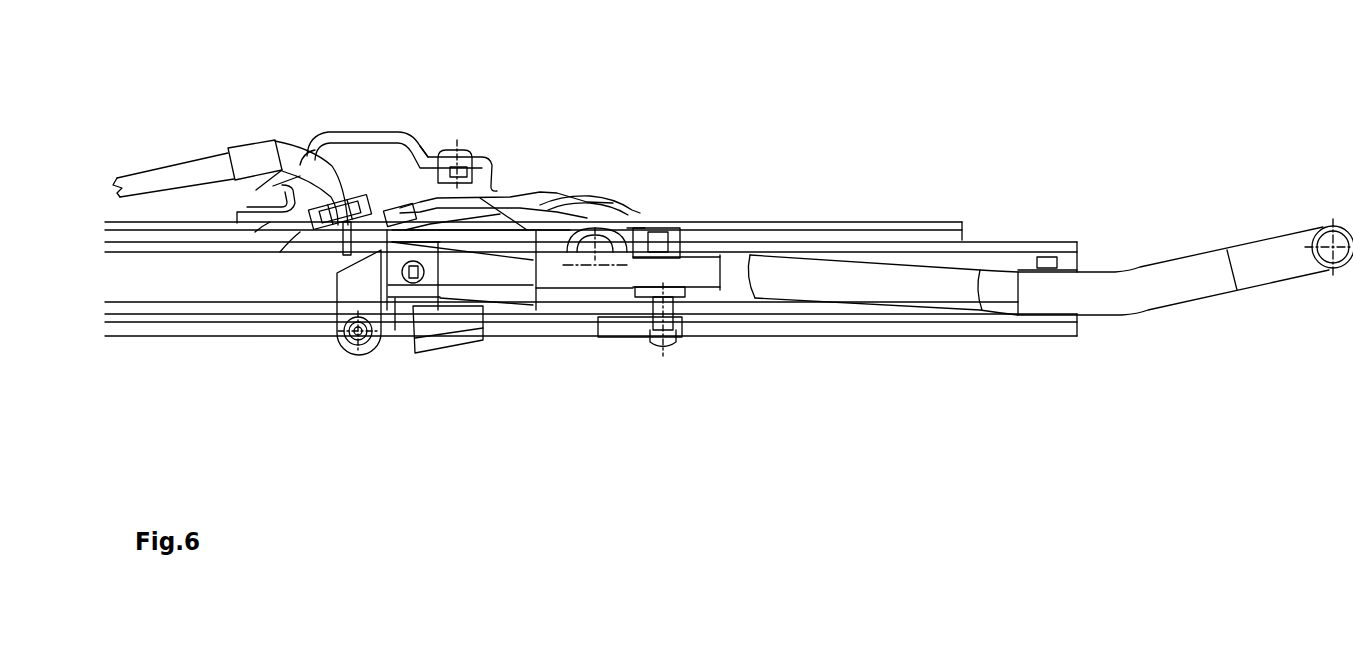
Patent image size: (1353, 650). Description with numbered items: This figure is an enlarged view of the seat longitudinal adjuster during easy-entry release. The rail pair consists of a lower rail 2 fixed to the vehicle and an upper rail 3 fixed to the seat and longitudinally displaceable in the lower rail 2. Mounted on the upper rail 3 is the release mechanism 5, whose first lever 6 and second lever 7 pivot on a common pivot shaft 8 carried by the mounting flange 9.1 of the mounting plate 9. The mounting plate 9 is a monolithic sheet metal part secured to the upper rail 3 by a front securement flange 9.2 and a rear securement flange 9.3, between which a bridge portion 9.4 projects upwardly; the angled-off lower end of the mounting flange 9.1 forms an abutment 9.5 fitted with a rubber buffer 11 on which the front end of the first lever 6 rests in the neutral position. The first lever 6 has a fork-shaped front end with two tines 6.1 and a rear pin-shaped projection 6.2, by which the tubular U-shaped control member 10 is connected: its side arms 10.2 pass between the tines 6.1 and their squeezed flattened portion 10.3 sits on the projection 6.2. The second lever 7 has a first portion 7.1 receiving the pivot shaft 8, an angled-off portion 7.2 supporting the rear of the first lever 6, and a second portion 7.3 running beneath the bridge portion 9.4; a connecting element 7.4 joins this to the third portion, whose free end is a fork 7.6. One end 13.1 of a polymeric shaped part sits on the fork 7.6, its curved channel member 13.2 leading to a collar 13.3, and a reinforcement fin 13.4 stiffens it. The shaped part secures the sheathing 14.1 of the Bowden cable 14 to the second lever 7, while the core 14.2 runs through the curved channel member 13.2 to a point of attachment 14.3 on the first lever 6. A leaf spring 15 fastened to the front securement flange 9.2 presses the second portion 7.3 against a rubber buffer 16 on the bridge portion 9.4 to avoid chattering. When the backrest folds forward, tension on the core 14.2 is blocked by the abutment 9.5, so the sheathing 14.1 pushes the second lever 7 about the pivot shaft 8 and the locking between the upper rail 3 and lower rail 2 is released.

The lower rail 2 is at (1064, 241).
The upper rail 3 is at (946, 222).
The release mechanism 5 is at (561, 29).
The first lever 6 is at (536, 296).
The tines 6.1 is at (668, 238).
The pin-shaped projection 6.2 is at (413, 283).
The second lever 7 is at (510, 212).
The first portion 7.1 is at (462, 200).
The angled-off portion 7.2 is at (466, 342).
The second portion 7.3 is at (425, 136).
The connecting element 7.4 is at (383, 190).
The fork 7.6 is at (297, 238).
The pivot shaft 8 is at (597, 245).
The mounting plate 9 is at (448, 81).
The mounting flange 9.1 is at (622, 210).
The front securement flange 9.2 is at (660, 225).
The rear securement flange 9.3 is at (261, 218).
The bridge portion 9.4 is at (398, 132).
The abutment 9.5 is at (628, 338).
The control member 10 is at (1327, 227).
The side arms 10.2 is at (952, 297).
The flattened portion 10.3 is at (399, 300).
The rubber buffer 11 is at (668, 338).
The end of shaped part 13.1 is at (349, 200).
The curved channel member 13.2 is at (324, 132).
The collar 13.3 is at (266, 140).
The reinforcement fin 13.4 is at (273, 186).
The Bowden cable 14 is at (222, 112).
The sheathing 14.1 is at (172, 168).
The core 14.2 is at (333, 254).
The point of attachment 14.3 is at (358, 348).
The leaf spring 15 is at (560, 197).
The rubber buffer 16 is at (483, 140).